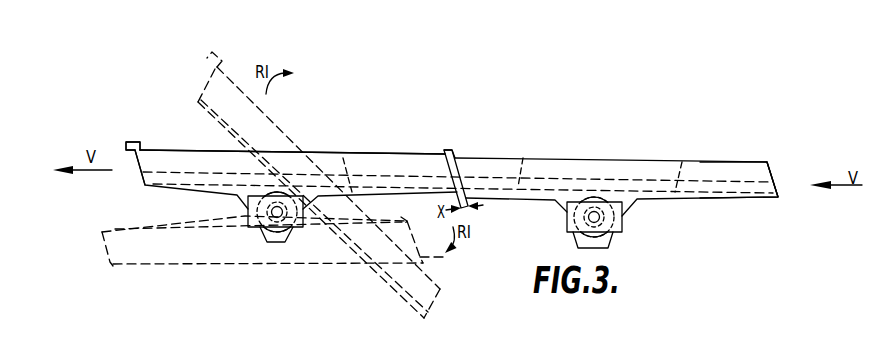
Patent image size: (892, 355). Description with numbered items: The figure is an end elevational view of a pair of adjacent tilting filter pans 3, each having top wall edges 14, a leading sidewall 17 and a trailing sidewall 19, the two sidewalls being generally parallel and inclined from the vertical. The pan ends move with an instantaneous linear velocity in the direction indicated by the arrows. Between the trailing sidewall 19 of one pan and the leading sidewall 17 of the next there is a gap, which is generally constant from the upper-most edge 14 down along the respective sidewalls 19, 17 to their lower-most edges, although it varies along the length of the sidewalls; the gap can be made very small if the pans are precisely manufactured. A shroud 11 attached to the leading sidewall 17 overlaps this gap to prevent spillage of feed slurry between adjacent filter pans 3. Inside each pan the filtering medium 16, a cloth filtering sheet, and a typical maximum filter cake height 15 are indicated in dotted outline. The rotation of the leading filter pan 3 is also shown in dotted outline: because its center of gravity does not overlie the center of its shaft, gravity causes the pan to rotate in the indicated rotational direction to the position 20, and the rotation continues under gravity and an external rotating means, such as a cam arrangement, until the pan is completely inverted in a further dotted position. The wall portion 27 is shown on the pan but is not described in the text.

The tilting filter pan 3 is at (420, 141).
The shroud 11 is at (131, 143).
The top wall edges 14 is at (205, 152).
The maximum filter cake height 15 is at (311, 153).
The filtering medium 16 is at (344, 157).
The leading sidewall 17 is at (143, 178).
The trailing sidewall 19 is at (769, 165).
The rotated position 20 is at (199, 74).
The side wall 27 is at (737, 170).